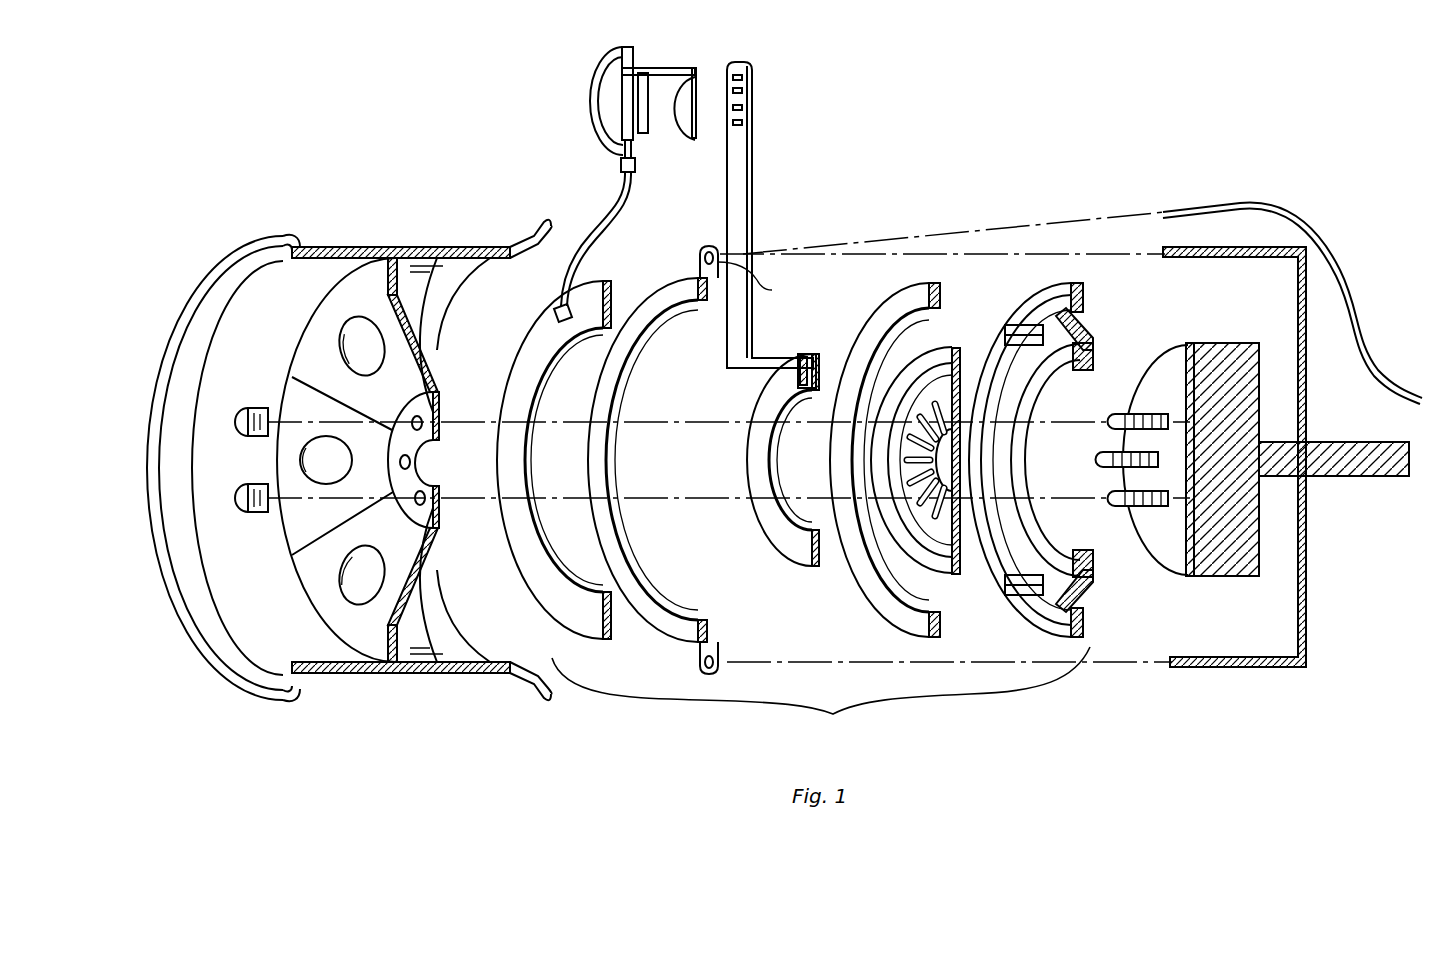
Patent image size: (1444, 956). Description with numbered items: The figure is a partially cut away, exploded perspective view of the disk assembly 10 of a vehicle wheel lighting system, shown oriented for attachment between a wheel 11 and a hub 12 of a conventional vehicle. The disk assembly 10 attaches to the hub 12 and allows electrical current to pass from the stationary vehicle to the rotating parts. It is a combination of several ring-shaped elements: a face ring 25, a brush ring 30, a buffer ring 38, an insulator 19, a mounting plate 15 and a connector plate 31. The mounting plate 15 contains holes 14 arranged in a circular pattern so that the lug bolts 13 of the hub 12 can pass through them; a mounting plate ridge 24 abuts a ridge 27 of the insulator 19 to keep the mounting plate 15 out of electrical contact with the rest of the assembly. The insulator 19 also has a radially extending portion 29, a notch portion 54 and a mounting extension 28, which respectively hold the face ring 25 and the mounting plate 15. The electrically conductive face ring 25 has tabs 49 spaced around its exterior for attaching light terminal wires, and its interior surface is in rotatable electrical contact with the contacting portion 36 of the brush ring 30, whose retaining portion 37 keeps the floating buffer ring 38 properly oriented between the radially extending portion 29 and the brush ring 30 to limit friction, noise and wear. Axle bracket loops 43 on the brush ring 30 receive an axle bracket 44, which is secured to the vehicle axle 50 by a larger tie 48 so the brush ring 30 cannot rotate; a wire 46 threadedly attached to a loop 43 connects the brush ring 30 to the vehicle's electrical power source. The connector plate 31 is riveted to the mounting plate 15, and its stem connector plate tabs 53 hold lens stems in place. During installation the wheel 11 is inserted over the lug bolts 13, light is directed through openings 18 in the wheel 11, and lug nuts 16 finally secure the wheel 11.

The disk assembly 10 is at (821, 693).
The wheel 11 is at (350, 246).
The hub 12 is at (1197, 343).
The lug bolts 13 is at (1130, 410).
The holes 14 is at (952, 530).
The mounting plate 15 is at (952, 582).
The lug nuts 16 is at (252, 410).
The openings 18 is at (372, 358).
The insulator 19 is at (1096, 322).
The mounting plate ridge 24 is at (952, 346).
The face ring 25 is at (589, 280).
The ridge 27 is at (1058, 298).
The mounting extension 28 is at (1094, 346).
The radially extending portion 29 is at (1075, 283).
The brush ring 30 is at (652, 284).
The connector plate 31 is at (808, 350).
The contacting portion 36 is at (697, 285).
The retaining portion 37 is at (758, 280).
The buffer ring 38 is at (882, 612).
The axle bracket loops 43 is at (708, 248).
The axle bracket 44 is at (1225, 247).
The wire 46 is at (1225, 203).
The larger tie 48 is at (1318, 442).
The tabs 49 is at (558, 314).
The vehicle axle 50 is at (1375, 442).
The stem connector plate tabs 53 is at (798, 372).
The notch portion 54 is at (1024, 322).